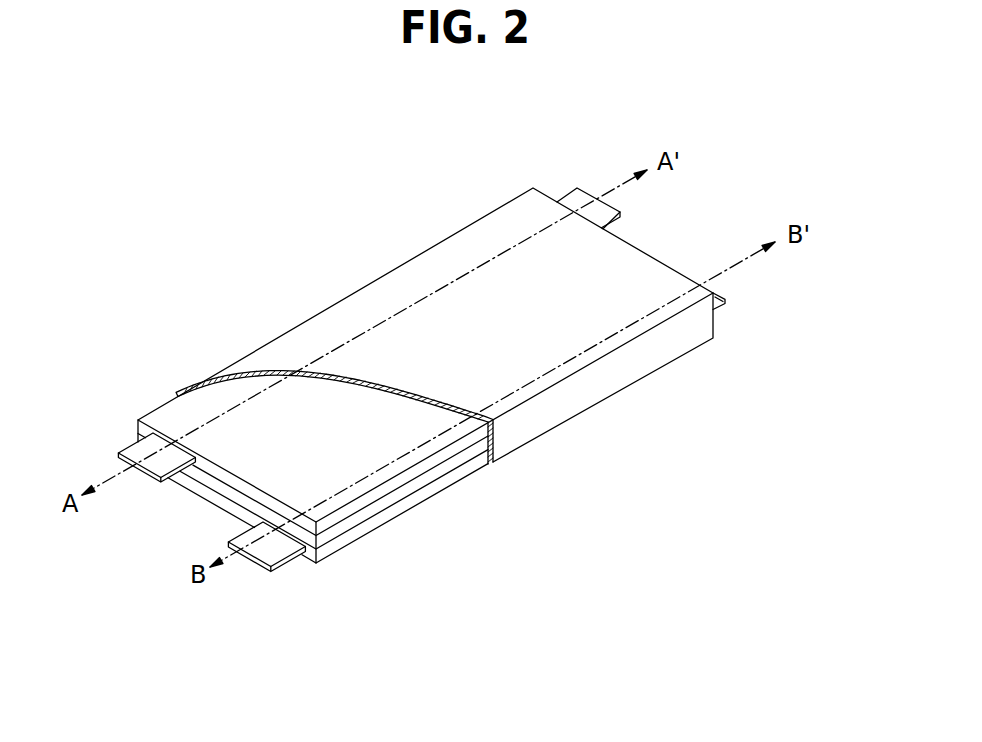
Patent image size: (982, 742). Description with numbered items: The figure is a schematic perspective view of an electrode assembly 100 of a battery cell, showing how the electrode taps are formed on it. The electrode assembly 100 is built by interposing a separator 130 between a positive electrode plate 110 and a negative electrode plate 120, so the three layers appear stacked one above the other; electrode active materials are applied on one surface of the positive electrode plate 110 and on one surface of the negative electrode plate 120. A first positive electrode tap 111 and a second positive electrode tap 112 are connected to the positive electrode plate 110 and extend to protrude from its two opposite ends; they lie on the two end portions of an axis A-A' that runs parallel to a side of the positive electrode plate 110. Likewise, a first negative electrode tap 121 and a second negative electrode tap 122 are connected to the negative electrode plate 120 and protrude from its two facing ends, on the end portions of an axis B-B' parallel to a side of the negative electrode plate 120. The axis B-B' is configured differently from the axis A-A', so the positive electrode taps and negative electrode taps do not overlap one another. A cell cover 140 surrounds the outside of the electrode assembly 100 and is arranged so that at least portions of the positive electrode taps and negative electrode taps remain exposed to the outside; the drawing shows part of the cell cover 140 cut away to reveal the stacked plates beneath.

The electrode assembly 100 is at (330, 273).
The positive electrode plate 110 is at (425, 470).
The first positive electrode tap 111 is at (162, 463).
The second positive electrode tap 112 is at (577, 197).
The negative electrode plate 120 is at (367, 525).
The first negative electrode tap 121 is at (273, 552).
The second negative electrode tap 122 is at (728, 301).
The separator 130 is at (397, 497).
The cell cover 140 is at (597, 392).